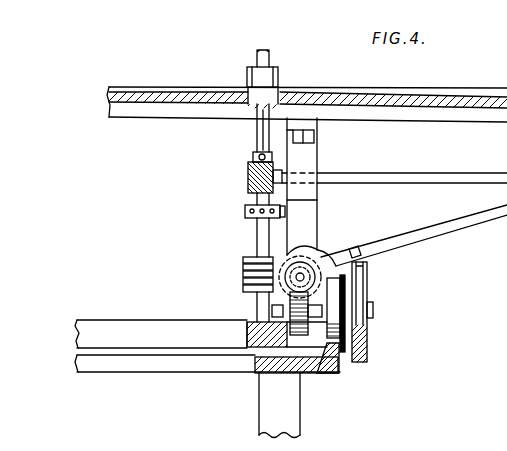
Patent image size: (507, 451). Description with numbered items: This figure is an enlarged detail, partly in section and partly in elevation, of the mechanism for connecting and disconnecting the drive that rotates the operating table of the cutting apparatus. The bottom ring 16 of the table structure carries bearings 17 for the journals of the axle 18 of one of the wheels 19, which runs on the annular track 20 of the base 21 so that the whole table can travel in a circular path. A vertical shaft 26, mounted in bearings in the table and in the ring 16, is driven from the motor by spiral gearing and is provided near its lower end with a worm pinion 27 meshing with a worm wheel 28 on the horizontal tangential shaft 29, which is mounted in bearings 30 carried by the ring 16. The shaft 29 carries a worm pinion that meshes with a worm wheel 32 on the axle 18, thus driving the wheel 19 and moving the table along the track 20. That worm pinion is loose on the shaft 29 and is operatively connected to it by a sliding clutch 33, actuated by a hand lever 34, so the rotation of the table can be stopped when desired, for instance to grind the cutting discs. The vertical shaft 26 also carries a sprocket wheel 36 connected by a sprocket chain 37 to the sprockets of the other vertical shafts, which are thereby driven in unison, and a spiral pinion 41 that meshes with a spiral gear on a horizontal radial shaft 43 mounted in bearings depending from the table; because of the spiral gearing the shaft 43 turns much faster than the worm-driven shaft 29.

The bottom ring 16 is at (148, 321).
The bearings 17 is at (257, 305).
The axle 18 is at (373, 310).
The wheel 19 is at (333, 298).
The annular track 20 is at (343, 368).
The base 21 is at (318, 375).
The vertical shaft 26 is at (257, 138).
The worm pinion 27 is at (243, 267).
The worm wheel 28 is at (262, 246).
The horizontal tangential shaft 29 is at (318, 254).
The bearings 30 is at (317, 158).
The worm wheel 32 is at (278, 373).
The sliding clutch 33 is at (338, 256).
The hand lever 34 is at (482, 226).
The sprocket wheel 36 is at (245, 210).
The sprocket chain 37 is at (317, 205).
The spiral pinion 41 is at (248, 174).
The horizontal radial shaft 43 is at (432, 177).